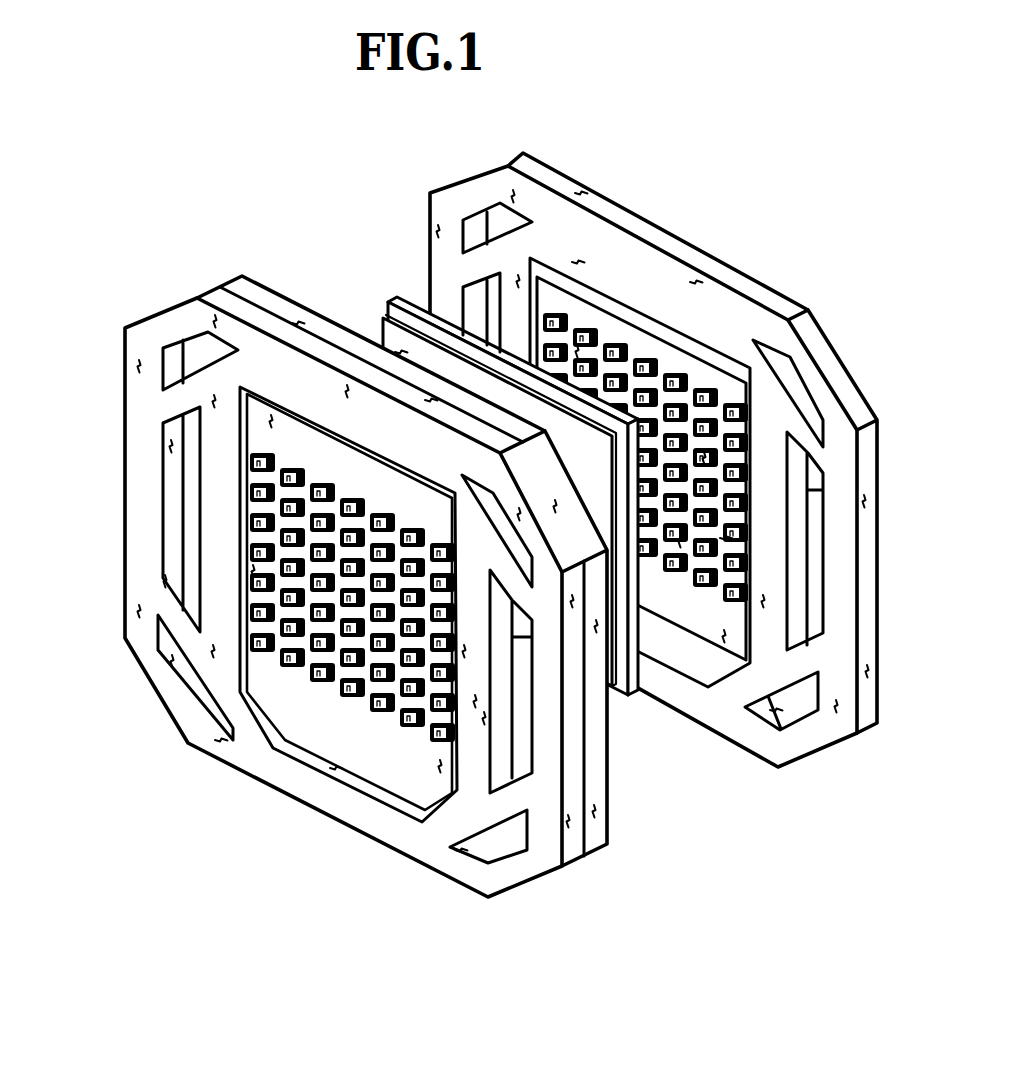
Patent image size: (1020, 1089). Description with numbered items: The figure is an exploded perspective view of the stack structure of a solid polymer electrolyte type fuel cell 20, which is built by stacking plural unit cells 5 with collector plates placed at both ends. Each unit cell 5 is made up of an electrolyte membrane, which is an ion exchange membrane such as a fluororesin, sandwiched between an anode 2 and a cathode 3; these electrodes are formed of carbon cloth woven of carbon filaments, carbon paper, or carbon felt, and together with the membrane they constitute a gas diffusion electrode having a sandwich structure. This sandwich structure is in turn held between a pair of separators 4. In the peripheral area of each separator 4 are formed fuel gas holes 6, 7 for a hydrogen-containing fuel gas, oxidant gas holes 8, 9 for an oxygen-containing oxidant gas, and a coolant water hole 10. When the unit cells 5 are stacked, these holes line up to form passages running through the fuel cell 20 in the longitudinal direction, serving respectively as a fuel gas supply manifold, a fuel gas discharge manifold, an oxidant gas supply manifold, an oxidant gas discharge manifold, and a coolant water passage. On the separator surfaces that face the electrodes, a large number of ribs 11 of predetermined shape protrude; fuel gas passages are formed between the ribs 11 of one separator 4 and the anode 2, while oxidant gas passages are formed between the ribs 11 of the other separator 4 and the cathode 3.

The anode 2 is at (617, 700).
The cathode 3 is at (383, 318).
The separator 4 is at (532, 868).
The unit cell 5 is at (375, 279).
The fuel gas hole 6 is at (653, 287).
The fuel gas hole 7 is at (300, 742).
The oxidant gas hole 8 is at (183, 530).
The oxidant gas hole 9 is at (813, 562).
The coolant water hole 10 is at (198, 345).
The rib 11 is at (438, 745).
The solid polymer electrolyte type fuel cell 20 is at (128, 261).